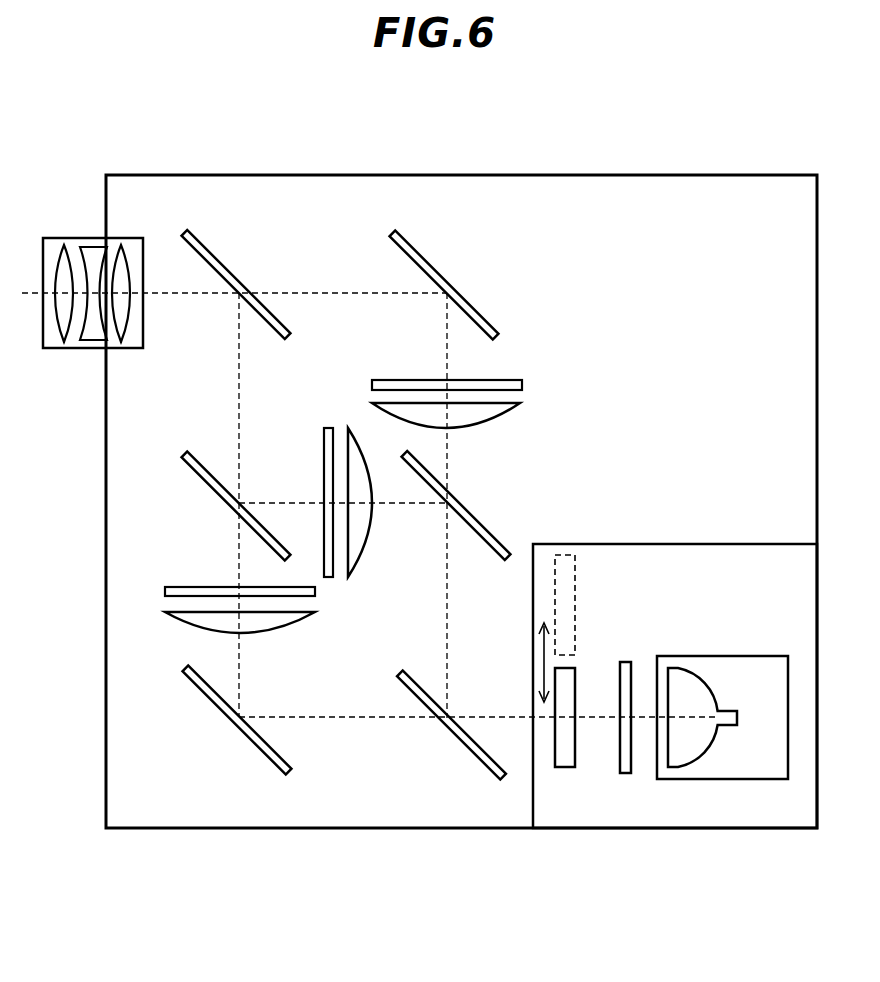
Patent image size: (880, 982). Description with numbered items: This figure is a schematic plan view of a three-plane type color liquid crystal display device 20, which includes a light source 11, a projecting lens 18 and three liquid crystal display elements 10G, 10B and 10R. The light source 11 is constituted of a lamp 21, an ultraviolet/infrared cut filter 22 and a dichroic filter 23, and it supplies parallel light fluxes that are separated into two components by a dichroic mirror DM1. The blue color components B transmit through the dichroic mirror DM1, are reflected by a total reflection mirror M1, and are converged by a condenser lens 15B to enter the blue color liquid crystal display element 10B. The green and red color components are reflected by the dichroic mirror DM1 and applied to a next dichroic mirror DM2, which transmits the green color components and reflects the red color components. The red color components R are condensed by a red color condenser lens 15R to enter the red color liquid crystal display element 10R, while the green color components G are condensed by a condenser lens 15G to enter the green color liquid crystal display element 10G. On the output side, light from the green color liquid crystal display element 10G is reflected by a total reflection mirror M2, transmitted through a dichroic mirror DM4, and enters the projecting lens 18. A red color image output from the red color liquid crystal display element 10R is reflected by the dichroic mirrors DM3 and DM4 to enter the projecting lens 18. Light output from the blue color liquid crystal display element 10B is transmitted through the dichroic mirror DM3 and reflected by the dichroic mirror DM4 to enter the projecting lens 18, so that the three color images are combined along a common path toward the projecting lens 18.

The liquid crystal display device 20 is at (404, 174).
The projecting lens 18 is at (64, 236).
The light source 11 is at (708, 543).
The lamp 21 is at (688, 666).
The ultraviolet/infrared cut filter 22 is at (625, 660).
The dichroic filter 23 is at (562, 770).
The dichroic mirror DM1 is at (483, 765).
The dichroic mirror DM2 is at (482, 520).
The dichroic mirror DM3 is at (200, 478).
The dichroic mirror DM4 is at (197, 238).
The total reflection mirror M1 is at (197, 687).
The total reflection mirror M2 is at (407, 238).
The green color liquid crystal display element 10G is at (503, 374).
The condenser lens 15G is at (502, 414).
The red color liquid crystal display element 10R is at (323, 452).
The red color condenser lens 15R is at (364, 562).
The blue color liquid crystal display element 10B is at (200, 585).
The condenser lens 15B is at (197, 627).
The red color components R is at (343, 505).
The green color components G is at (246, 505).
The blue color components B is at (478, 703).